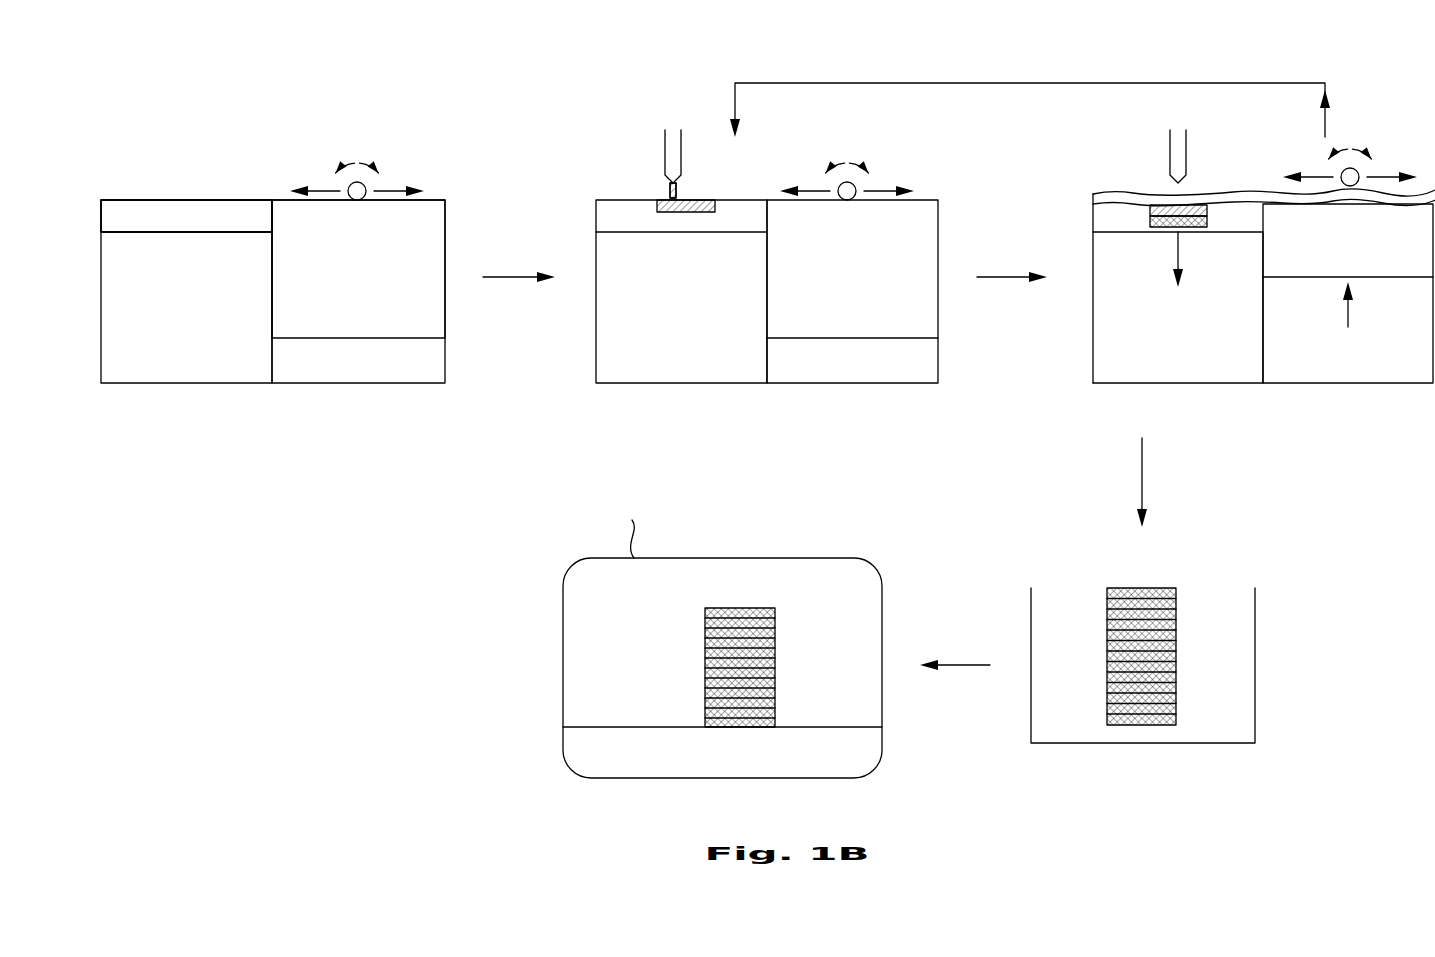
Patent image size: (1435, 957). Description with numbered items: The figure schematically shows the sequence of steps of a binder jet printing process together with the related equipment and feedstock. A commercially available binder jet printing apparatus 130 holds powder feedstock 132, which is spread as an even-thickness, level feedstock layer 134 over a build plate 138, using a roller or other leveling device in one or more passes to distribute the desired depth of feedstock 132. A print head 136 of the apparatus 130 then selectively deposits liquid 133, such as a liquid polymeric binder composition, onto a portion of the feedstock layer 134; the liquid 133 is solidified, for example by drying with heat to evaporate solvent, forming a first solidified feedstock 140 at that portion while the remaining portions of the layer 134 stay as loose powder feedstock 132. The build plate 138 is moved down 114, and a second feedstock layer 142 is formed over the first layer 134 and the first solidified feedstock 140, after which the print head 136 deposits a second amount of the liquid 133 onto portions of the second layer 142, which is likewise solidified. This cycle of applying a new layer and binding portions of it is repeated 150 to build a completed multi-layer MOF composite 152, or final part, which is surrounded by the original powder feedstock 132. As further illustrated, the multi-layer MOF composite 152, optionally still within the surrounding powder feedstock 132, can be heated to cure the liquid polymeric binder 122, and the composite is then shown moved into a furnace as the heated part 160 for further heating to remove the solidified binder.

The binder jet printing apparatus 130 is at (269, 219).
The feedstock 132 is at (127, 218).
The liquid 133 is at (683, 185).
The feedstock layer 134 is at (238, 218).
The print head 136 is at (665, 148).
The build plate 138 is at (165, 233).
The first solidified feedstock 140 is at (662, 199).
The second feedstock layer 142 is at (1110, 198).
The repeating of steps 150 is at (1030, 97).
The moving down of build plate 114 is at (1035, 120).
The heating to cure liquid polymeric binder 122 is at (1309, 755).
The multi-layer MOF composite 152 is at (1161, 610).
The sintered part 160 is at (750, 654).